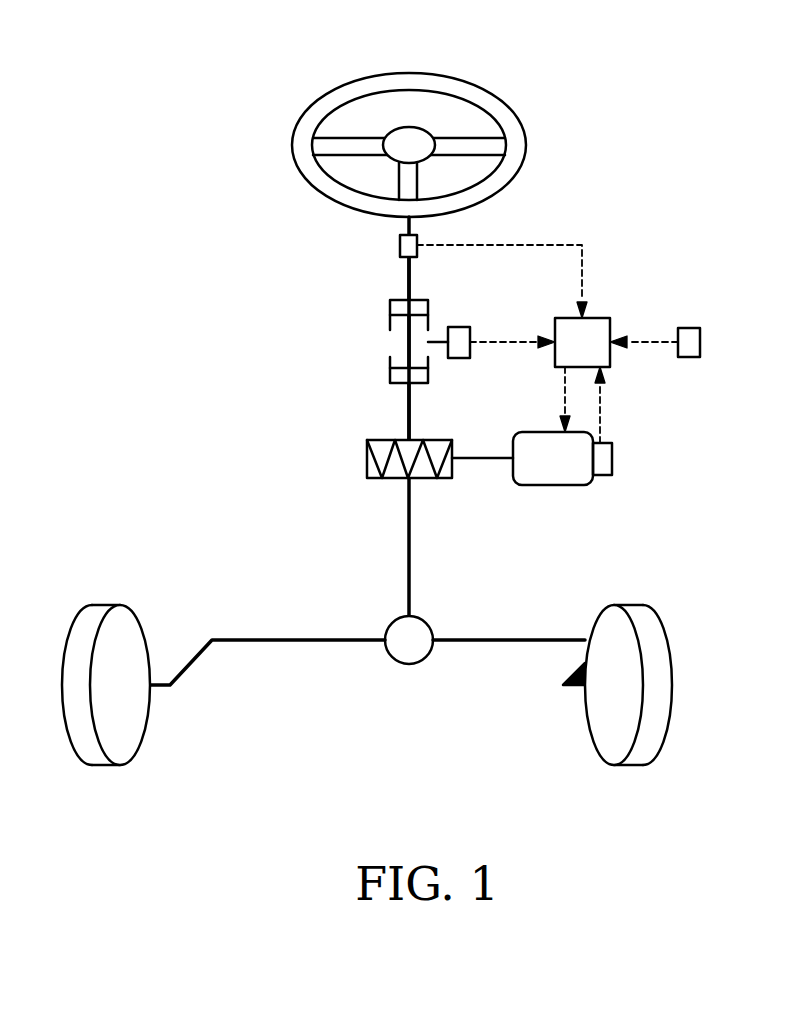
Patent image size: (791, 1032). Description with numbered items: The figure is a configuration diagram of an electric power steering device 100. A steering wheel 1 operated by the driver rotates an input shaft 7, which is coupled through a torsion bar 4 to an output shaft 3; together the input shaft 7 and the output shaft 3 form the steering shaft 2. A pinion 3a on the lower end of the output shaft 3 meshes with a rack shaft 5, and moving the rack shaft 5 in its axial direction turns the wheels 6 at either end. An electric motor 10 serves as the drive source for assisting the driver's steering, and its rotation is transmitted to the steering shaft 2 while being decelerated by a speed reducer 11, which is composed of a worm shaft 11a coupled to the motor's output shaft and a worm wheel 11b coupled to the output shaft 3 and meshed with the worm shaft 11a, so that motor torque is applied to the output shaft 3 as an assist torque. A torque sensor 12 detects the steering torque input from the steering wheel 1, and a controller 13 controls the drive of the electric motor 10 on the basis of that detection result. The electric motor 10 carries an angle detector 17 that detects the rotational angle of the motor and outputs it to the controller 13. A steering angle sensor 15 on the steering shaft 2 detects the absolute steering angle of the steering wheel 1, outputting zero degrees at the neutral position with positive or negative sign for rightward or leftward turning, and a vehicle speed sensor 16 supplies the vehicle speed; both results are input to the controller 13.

The steering wheel 1 is at (498, 108).
The electric power steering device 100 is at (584, 198).
The steering shaft 2 is at (384, 276).
The input shaft 7 is at (408, 288).
The output shaft 3 is at (408, 413).
The pinion 3a is at (417, 630).
The torsion bar 4 is at (407, 336).
The rack shaft 5 is at (283, 642).
The wheels 6 is at (128, 625).
The electric motor 10 is at (557, 475).
The speed reducer 11 is at (390, 487).
The worm shaft 11a is at (487, 458).
The worm wheel 11b is at (370, 478).
The torque sensor 12 is at (457, 327).
The controller 13 is at (590, 328).
The steering angle sensor 15 is at (420, 244).
The vehicle speed sensor 16 is at (688, 337).
The angle detector 17 is at (600, 457).